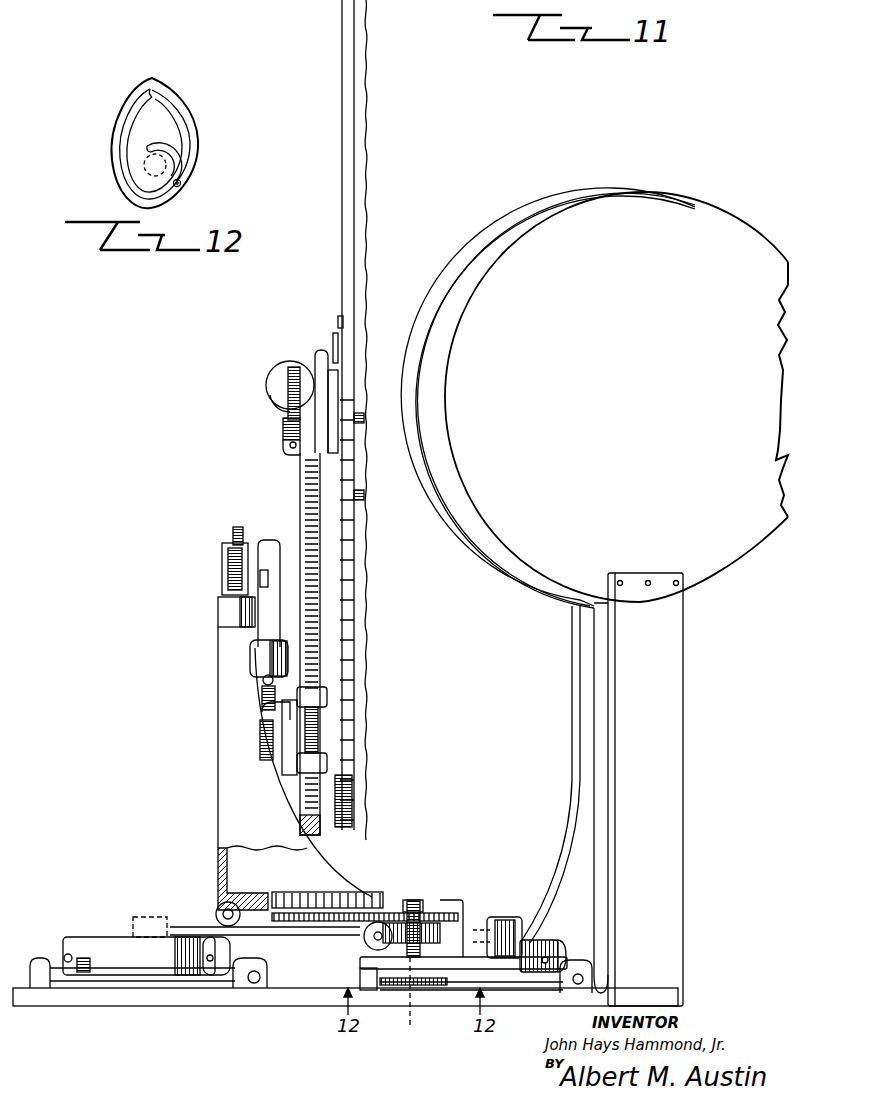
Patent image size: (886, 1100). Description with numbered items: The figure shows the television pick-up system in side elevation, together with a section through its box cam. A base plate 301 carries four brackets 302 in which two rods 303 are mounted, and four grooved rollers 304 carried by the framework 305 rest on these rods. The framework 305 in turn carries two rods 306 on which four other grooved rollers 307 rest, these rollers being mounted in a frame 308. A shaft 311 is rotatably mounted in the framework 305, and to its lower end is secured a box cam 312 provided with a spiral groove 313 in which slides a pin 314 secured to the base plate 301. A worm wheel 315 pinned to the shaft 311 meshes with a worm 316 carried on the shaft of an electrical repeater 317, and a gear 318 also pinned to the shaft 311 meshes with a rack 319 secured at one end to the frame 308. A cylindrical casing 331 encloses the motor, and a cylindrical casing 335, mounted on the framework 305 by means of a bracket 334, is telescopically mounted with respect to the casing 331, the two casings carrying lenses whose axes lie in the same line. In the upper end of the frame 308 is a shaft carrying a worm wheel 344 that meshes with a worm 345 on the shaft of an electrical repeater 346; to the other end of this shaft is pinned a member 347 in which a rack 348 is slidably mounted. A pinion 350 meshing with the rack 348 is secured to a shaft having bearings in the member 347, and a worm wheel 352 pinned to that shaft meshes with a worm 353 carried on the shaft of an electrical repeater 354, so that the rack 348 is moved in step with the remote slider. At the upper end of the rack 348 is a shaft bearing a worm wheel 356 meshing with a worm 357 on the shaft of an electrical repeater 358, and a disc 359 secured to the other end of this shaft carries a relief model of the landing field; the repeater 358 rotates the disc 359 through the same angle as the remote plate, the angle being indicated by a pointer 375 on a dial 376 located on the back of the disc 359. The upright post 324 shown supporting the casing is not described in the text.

In FIG. 11, the base plate 301 is at (205, 995).
In FIG. 11, the brackets 302 is at (46, 988).
In FIG. 11, the rods 303 is at (172, 982).
In FIG. 11, the grooved rollers 304 is at (90, 972).
In FIG. 11, the framework 305 is at (118, 918).
In FIG. 11, the rods 306 is at (215, 930).
In FIG. 11, the grooved rollers 307 is at (226, 905).
In FIG. 11, the frame 308 is at (218, 865).
In FIG. 12, the shaft 311 is at (168, 160).
In FIG. 11, the shaft 311 is at (414, 900).
In FIG. 12, the box cam 312 is at (112, 155).
In FIG. 11, the box cam 312 is at (380, 982).
In FIG. 12, the spiral groove 313 is at (132, 120).
In FIG. 12, the pin 314 is at (181, 183).
In FIG. 11, the pin 314 is at (409, 1002).
In FIG. 11, the worm wheel 315 is at (440, 950).
In FIG. 11, the worm 316 is at (377, 938).
In FIG. 11, the electrical repeater 317 is at (368, 934).
In FIG. 11, the gear 318 is at (420, 906).
In FIG. 11, the rack 319 is at (312, 928).
In FIG. 11, the upright post 324 is at (668, 676).
In FIG. 11, the cylindrical casing 331 is at (688, 222).
In FIG. 11, the bracket 334 is at (572, 690).
In FIG. 11, the cylindrical casing 335 is at (444, 262).
In FIG. 11, the worm wheel 344 is at (246, 516).
In FIG. 11, the worm 345 is at (222, 570).
In FIG. 11, the electrical repeater 346 is at (218, 608).
In FIG. 11, the member 347 is at (270, 620).
In FIG. 11, the rack 348 is at (302, 481).
In FIG. 11, the pinion 350 is at (327, 738).
In FIG. 11, the worm wheel 352 is at (262, 737).
In FIG. 11, the worm 353 is at (262, 697).
In FIG. 11, the electrical repeater 354 is at (255, 663).
In FIG. 11, the worm wheel 356 is at (296, 367).
In FIG. 11, the worm 357 is at (283, 425).
In FIG. 11, the electrical repeater 358 is at (270, 377).
In FIG. 11, the disc 359 is at (350, 88).
In FIG. 11, the pointer 375 is at (337, 340).
In FIG. 11, the dial 376 is at (343, 320).